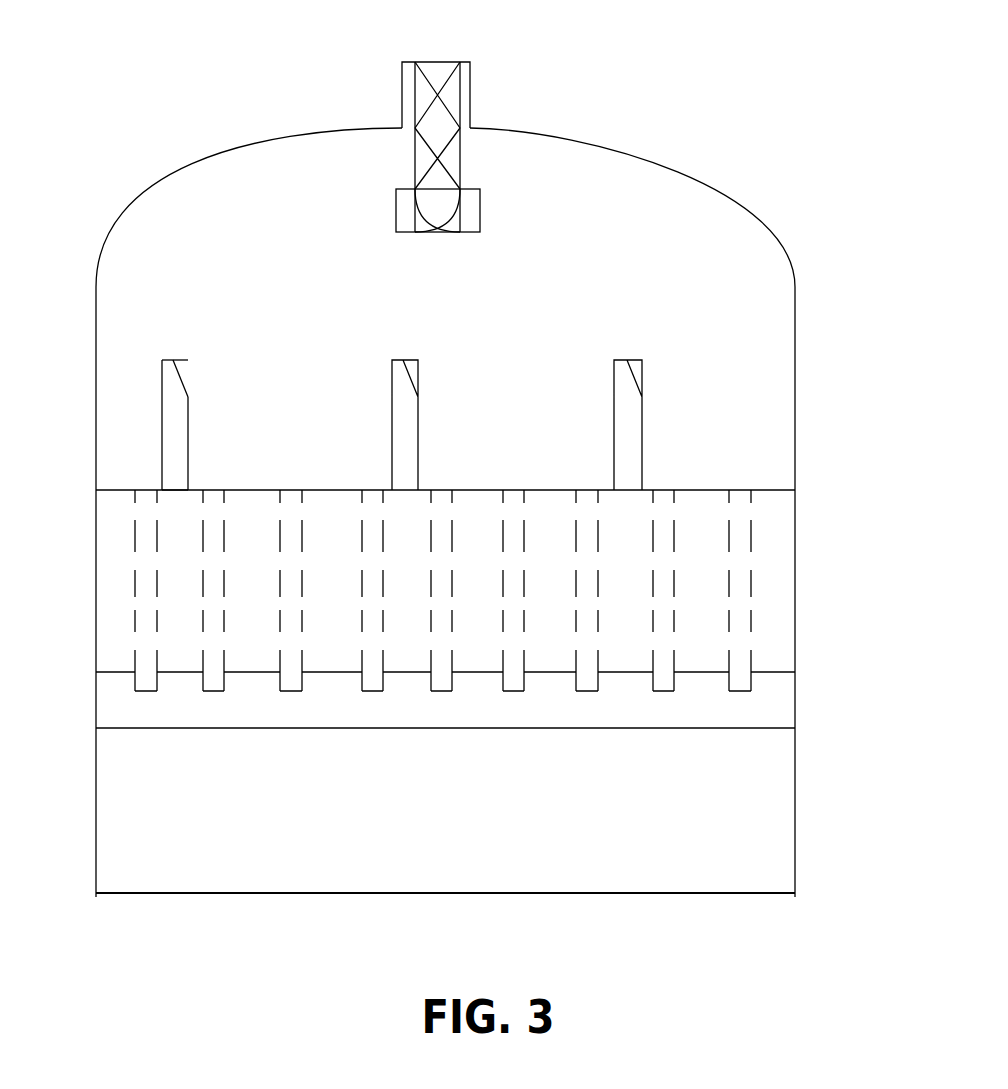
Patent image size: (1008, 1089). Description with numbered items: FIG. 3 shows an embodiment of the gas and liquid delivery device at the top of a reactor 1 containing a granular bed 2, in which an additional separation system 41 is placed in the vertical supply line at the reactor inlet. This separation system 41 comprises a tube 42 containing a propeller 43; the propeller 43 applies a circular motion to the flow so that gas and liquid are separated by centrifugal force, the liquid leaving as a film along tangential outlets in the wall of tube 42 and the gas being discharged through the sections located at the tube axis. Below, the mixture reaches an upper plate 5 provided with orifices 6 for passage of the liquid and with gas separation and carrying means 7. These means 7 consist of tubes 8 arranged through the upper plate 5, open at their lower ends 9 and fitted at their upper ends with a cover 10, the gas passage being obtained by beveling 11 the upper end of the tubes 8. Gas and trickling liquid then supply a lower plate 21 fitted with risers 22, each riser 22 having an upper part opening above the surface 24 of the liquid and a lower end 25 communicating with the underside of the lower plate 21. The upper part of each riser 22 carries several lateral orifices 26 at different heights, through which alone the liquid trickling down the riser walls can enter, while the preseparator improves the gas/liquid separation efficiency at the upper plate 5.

The reactor 1 is at (712, 188).
The granular bed 2 is at (782, 833).
The upper plate 5 is at (762, 480).
The orifices 6 is at (688, 490).
The gas separation and carrying means 7 is at (136, 418).
The tubes 8 is at (182, 428).
The lower ends 9 is at (177, 460).
The cover 10 is at (184, 332).
The beveling 11 is at (183, 375).
The lower plate 21 is at (105, 662).
The risers 22 is at (757, 532).
The surface of the liquid 24 is at (118, 595).
The lower end 25 is at (743, 692).
The lateral orifices 26 is at (745, 602).
The additional separation system 41 is at (484, 150).
The tube 42 is at (465, 79).
The propeller 43 is at (437, 97).